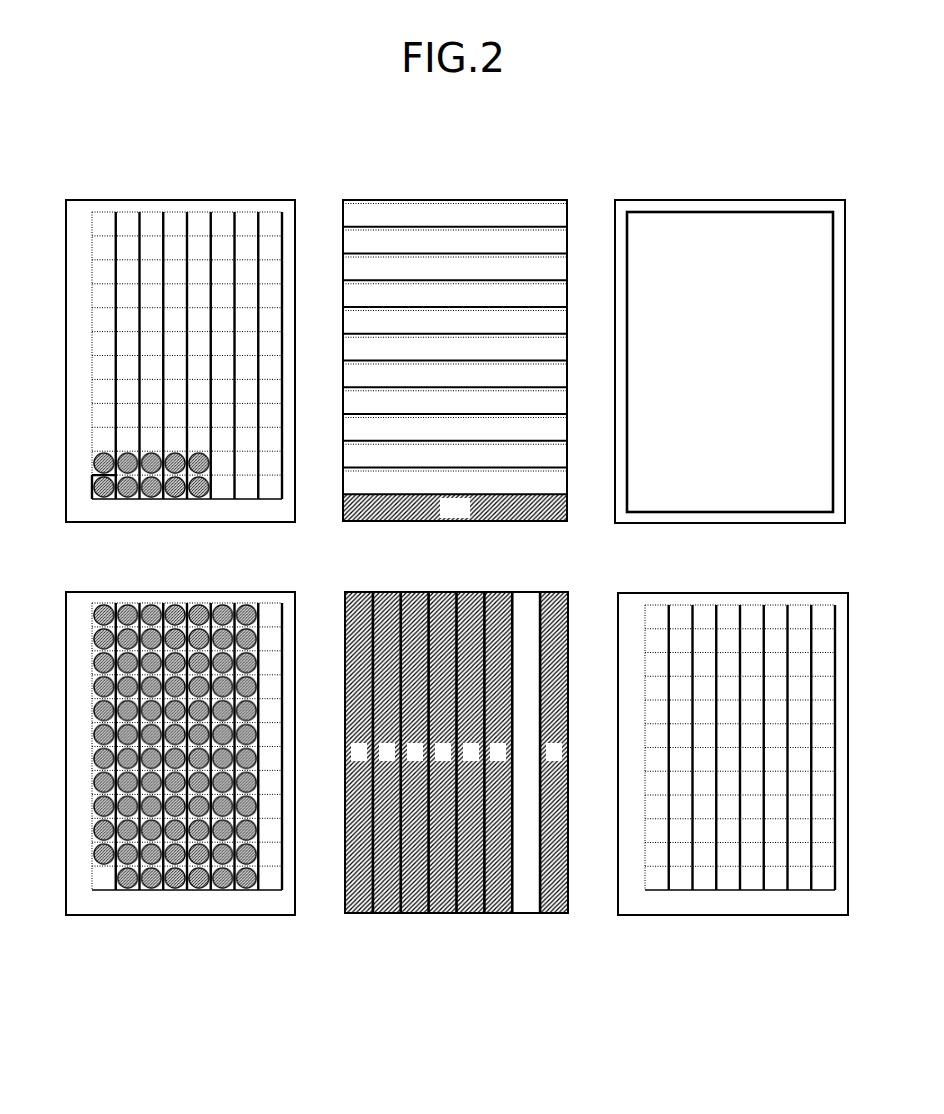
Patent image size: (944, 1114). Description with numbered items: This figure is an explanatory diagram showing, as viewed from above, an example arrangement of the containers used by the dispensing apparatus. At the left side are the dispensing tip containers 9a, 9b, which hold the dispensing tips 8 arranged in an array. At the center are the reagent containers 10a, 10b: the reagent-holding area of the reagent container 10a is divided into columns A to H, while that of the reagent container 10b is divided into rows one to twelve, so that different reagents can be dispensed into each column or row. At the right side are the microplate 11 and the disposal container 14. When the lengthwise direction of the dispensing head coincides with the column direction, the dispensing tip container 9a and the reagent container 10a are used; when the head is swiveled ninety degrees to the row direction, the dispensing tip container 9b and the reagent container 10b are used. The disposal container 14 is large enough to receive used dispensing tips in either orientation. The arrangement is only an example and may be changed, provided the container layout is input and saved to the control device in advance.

The dispensing tip 8 is at (102, 608).
The dispensing tip container 9a is at (160, 917).
The dispensing tip container 9b is at (129, 199).
The reagent container 10a is at (443, 915).
The reagent container 10b is at (423, 199).
The microplate 11 is at (758, 917).
The disposal container 14 is at (719, 200).